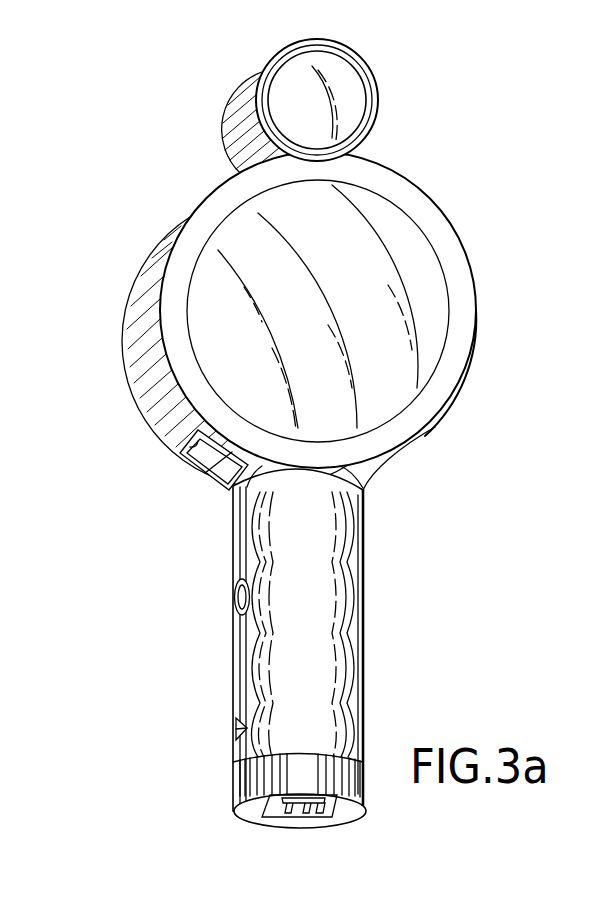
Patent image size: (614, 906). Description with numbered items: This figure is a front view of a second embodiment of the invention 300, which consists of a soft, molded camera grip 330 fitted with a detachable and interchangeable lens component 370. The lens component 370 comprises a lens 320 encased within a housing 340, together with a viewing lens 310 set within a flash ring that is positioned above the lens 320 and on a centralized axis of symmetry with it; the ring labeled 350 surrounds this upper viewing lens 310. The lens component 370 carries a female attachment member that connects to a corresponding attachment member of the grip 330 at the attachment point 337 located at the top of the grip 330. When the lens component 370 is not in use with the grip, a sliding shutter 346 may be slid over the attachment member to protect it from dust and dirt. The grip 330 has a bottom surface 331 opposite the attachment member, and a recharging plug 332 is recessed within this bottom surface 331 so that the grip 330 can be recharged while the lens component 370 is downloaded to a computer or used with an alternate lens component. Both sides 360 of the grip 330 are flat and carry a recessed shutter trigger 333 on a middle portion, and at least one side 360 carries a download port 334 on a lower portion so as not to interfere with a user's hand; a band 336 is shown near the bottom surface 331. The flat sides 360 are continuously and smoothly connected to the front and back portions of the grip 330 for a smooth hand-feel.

The second embodiment of the invention 300 is at (350, 437).
The viewing lens 310 is at (322, 263).
The lens 320 is at (247, 356).
The grip 330 is at (343, 631).
The bottom surface 331 is at (360, 807).
The recharging plug 332 is at (263, 812).
The shutter trigger 333 is at (235, 597).
The download port 334 is at (236, 727).
The end band 336 is at (233, 779).
The attachment point 337 is at (258, 478).
The housing 340 is at (443, 243).
The sliding shutter 346 is at (195, 455).
The top ring 350 is at (377, 106).
The sides 360 is at (234, 665).
The lens component 370 is at (481, 372).